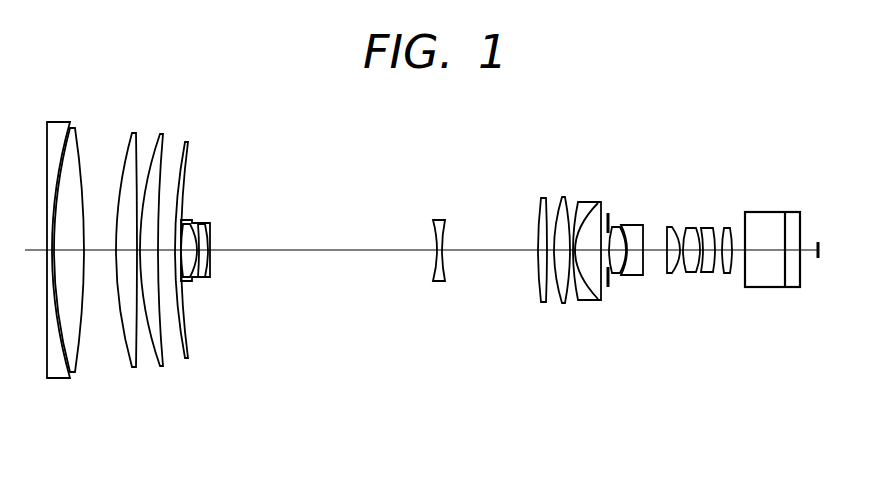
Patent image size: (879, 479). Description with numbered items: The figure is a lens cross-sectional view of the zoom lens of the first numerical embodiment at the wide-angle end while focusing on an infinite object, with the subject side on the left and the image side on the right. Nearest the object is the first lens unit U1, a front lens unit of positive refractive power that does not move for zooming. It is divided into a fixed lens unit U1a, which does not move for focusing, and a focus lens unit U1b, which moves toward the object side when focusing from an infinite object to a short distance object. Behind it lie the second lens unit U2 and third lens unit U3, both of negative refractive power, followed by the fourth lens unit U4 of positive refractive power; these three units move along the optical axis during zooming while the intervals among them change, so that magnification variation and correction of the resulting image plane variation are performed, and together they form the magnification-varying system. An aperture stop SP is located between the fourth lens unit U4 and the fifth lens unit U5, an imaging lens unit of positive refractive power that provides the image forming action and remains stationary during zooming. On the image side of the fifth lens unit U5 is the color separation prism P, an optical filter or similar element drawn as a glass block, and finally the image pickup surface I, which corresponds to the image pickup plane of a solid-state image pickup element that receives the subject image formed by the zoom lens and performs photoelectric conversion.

The first lens unit U1 is at (115, 258).
The fixed lens unit U1a is at (82, 103).
The focus lens unit U1b is at (188, 111).
The second lens unit U2 is at (212, 377).
The third lens unit U3 is at (453, 315).
The fourth lens unit U4 is at (602, 315).
The fifth lens unit U5 is at (733, 315).
The aperture stop SP is at (612, 209).
The color separation prism P is at (760, 212).
The image pickup surface I is at (816, 236).